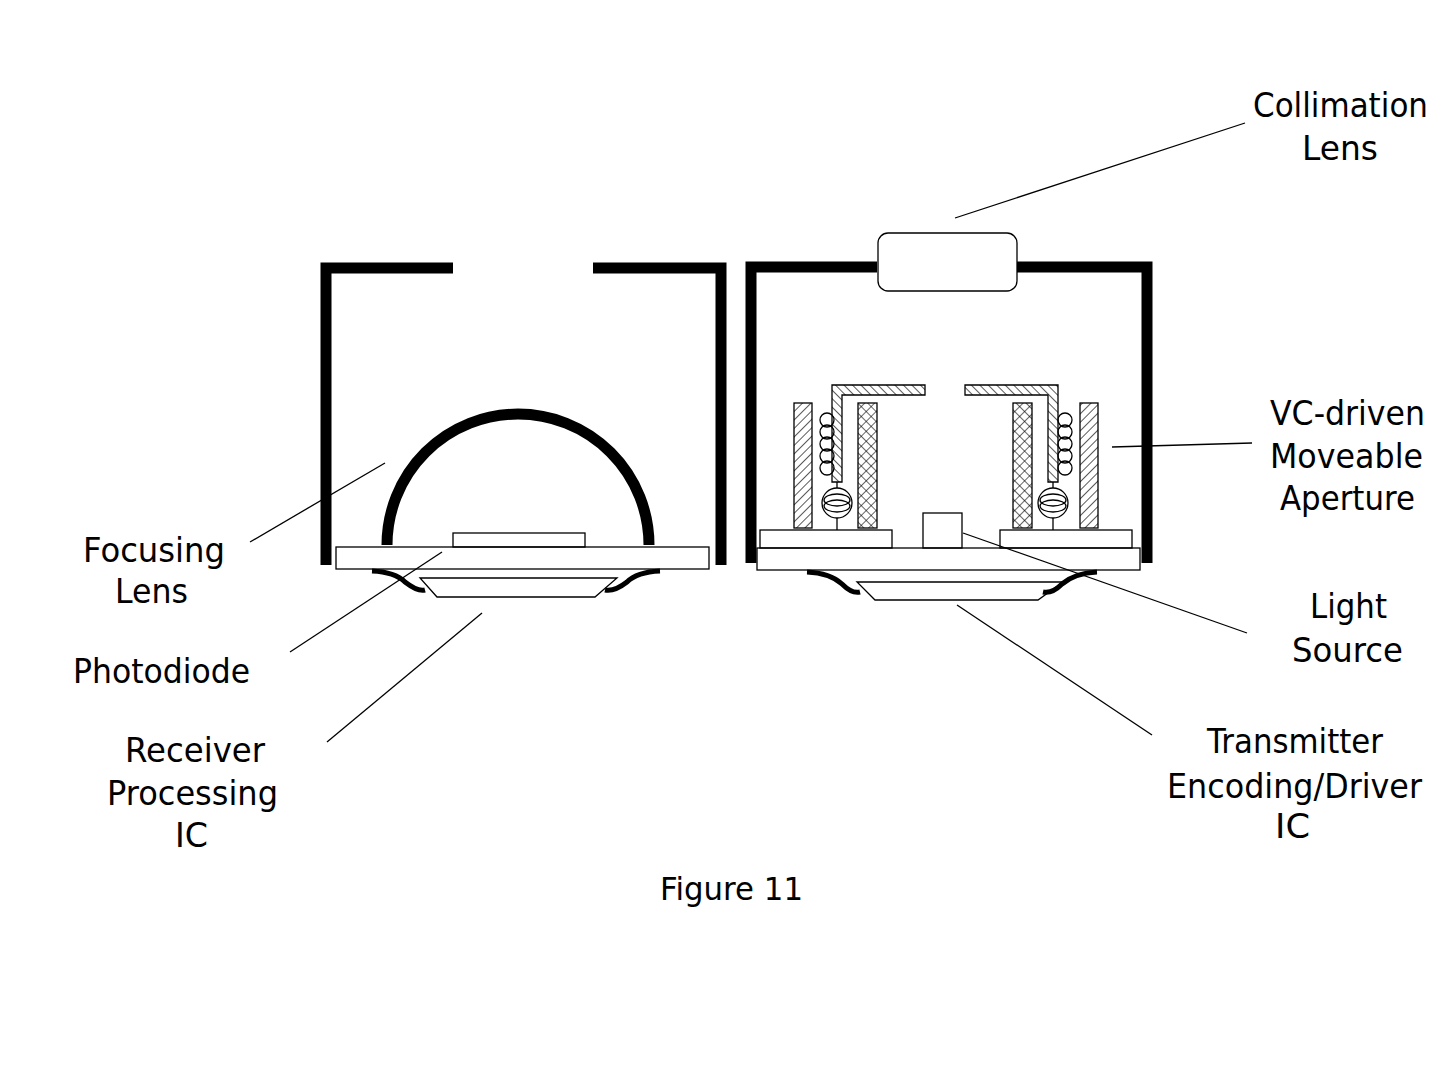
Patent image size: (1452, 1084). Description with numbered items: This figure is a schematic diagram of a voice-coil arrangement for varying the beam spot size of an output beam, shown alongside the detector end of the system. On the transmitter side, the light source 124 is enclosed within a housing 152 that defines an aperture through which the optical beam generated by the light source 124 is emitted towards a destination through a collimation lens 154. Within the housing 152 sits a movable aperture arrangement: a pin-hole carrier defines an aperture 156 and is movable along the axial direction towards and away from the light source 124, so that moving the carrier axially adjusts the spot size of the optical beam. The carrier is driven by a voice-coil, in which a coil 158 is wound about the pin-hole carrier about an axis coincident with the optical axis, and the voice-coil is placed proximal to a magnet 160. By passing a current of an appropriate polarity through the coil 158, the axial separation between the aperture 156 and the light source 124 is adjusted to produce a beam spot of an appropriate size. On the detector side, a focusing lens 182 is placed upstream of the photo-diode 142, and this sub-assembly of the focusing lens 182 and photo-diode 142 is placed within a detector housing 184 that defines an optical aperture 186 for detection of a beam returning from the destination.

The light source 124 is at (940, 500).
The photo-diode 142 is at (547, 540).
The housing 152 is at (1153, 367).
The collimation lens 154 is at (940, 210).
The aperture 156 is at (948, 378).
The coil 158 is at (1063, 420).
The magnet 160 is at (1100, 428).
The focusing lens 182 is at (565, 418).
The detector housing 184 is at (300, 254).
The optical aperture 186 is at (537, 254).